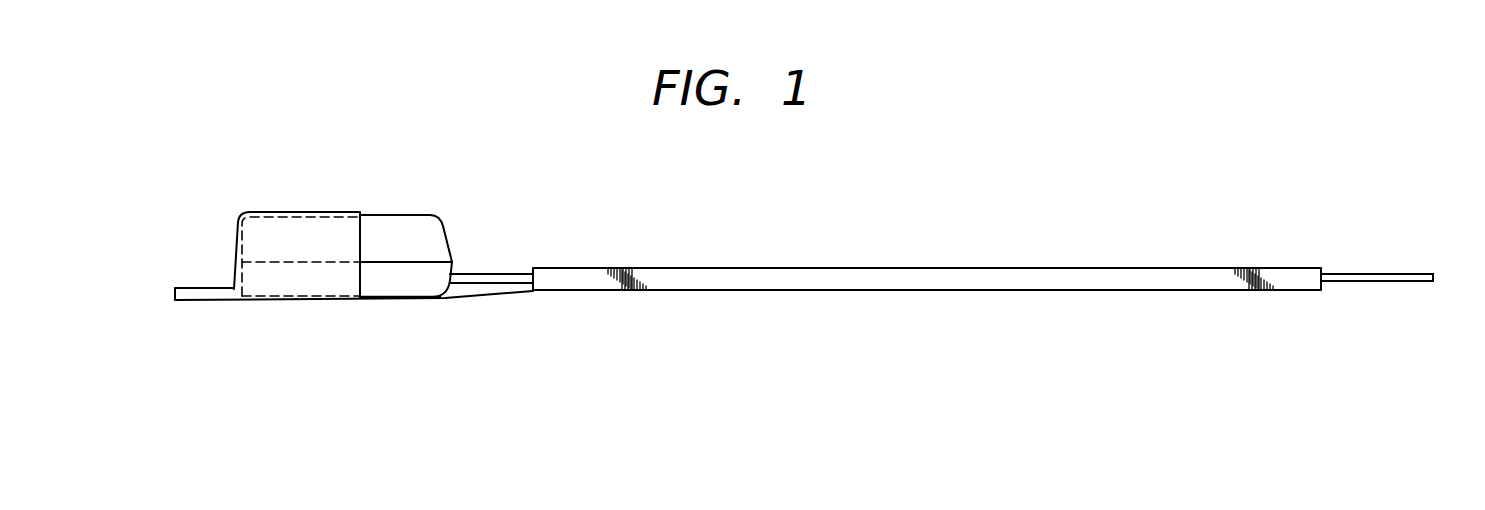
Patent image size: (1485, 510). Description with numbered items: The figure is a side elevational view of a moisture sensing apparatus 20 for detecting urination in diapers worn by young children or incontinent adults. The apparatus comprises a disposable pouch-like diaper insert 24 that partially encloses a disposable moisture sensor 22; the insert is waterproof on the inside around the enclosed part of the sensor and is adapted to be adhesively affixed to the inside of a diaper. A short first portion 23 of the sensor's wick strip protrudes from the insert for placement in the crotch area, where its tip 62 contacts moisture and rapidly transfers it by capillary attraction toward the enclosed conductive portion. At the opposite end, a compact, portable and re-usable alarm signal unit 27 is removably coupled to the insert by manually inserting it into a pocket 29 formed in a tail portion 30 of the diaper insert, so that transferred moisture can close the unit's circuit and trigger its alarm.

The moisture sensing apparatus 20 is at (917, 142).
The moisture sensor 22 is at (1393, 284).
The first portion of wick strip 23 is at (1372, 272).
The diaper insert 24 is at (902, 290).
The alarm signal unit 27 is at (397, 216).
The pocket 29 is at (233, 240).
The tail portion 30 is at (312, 305).
The tip 62 is at (1435, 276).